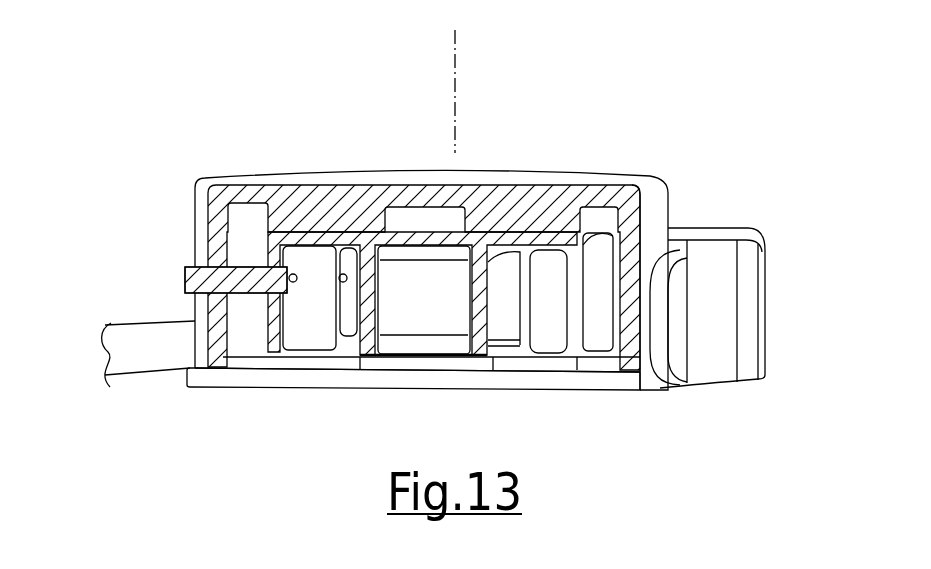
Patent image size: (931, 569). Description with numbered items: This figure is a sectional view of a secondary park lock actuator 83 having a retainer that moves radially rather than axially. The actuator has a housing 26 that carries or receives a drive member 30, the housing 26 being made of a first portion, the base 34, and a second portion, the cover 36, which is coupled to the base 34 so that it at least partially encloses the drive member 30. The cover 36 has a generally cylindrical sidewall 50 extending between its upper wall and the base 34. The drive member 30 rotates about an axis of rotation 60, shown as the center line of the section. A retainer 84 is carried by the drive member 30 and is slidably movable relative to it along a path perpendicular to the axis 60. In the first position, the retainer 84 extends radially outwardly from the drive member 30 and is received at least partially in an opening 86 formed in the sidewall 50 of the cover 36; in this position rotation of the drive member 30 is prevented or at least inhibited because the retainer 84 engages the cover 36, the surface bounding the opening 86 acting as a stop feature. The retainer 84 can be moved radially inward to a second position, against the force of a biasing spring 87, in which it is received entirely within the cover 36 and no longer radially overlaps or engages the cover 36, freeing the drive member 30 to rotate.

The housing 26 is at (697, 178).
The drive member 30 is at (592, 307).
The base 34 is at (590, 382).
The cover 36 is at (672, 212).
The sidewall 50 is at (213, 331).
The axis 60 is at (455, 31).
The secondary park lock actuator 83 is at (790, 133).
The retainer 84 is at (237, 267).
The opening 86 is at (202, 292).
The biasing spring 87 is at (330, 279).